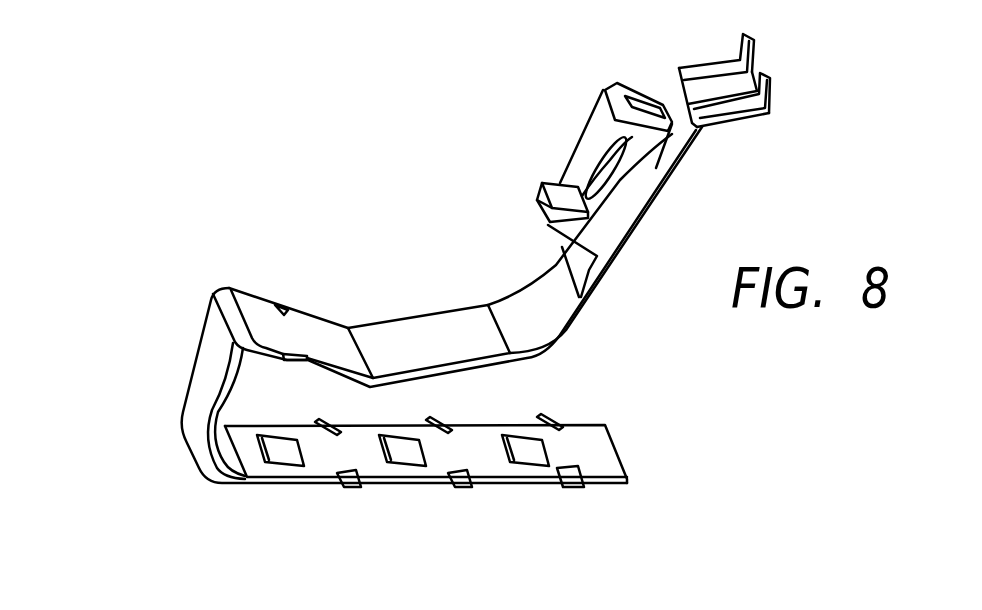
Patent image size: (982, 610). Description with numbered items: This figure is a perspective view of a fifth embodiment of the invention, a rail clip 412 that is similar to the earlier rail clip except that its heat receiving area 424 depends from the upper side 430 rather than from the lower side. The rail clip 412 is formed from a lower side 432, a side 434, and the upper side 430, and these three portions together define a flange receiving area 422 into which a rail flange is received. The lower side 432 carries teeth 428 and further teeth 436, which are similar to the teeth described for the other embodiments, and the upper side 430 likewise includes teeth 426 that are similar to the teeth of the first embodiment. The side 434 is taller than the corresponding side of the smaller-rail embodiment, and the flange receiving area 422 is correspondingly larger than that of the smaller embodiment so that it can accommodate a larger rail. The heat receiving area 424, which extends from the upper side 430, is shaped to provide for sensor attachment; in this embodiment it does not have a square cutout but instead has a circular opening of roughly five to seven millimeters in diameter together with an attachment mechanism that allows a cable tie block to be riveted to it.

The rail clip 412 is at (153, 311).
The flange receiving area 422 is at (552, 380).
The heat receiving area 424 is at (538, 197).
The teeth 426 is at (285, 310).
The teeth 428 is at (462, 485).
The upper side 430 is at (437, 352).
The lower side 432 is at (490, 464).
The side 434 is at (212, 376).
The teeth 436 is at (535, 450).